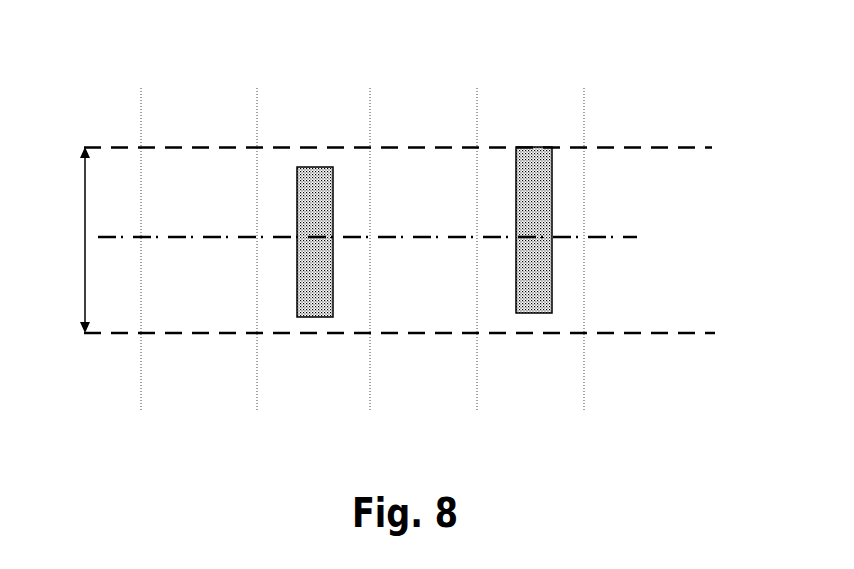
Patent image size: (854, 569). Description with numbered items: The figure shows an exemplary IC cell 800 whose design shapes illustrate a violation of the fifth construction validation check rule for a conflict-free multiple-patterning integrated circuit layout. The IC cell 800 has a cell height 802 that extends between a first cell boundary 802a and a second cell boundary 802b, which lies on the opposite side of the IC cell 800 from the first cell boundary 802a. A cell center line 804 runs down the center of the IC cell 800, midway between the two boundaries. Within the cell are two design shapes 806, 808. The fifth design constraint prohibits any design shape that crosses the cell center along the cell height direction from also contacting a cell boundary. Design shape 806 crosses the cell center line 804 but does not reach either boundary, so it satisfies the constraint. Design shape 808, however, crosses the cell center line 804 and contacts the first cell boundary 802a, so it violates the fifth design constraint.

The IC cell 800 is at (85, 66).
The cell height 802 is at (62, 240).
The first cell boundary 802a is at (697, 148).
The second cell boundary 802b is at (690, 333).
The cell center line 804 is at (645, 237).
The design shape 806 is at (315, 317).
The design shape 808 is at (533, 313).